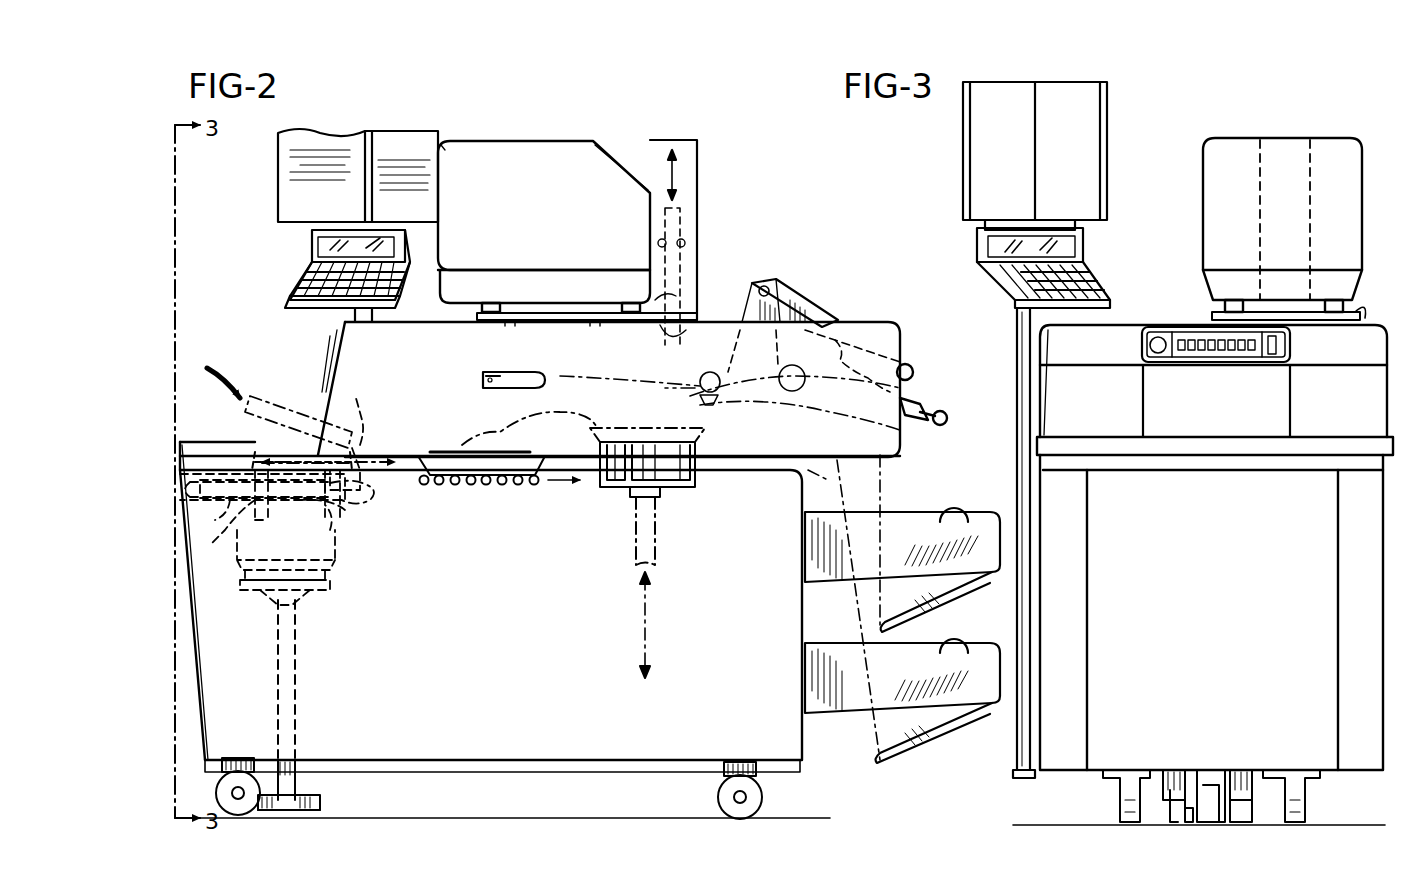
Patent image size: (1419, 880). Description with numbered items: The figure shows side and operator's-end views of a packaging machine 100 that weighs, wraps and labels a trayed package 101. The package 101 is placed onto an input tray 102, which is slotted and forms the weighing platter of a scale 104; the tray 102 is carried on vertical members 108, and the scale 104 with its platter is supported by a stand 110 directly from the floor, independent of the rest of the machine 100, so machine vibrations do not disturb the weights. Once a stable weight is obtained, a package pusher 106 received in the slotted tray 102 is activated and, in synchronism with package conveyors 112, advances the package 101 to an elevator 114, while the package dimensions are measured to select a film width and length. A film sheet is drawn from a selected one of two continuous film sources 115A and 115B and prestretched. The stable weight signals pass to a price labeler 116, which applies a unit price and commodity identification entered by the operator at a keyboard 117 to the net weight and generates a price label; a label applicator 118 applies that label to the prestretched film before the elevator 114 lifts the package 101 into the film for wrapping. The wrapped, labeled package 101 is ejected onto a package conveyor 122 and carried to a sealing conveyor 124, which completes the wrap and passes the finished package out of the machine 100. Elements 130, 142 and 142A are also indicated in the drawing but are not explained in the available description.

In FIG. 2, the packaging machine 100 is at (780, 272).
In FIG. 3, the packaging machine 100 is at (1151, 148).
In FIG. 2, the package 101 is at (268, 395).
In FIG. 2, the input tray 102 is at (360, 448).
In FIG. 3, the input tray 102 is at (1225, 437).
In FIG. 2, the scale 104 is at (335, 530).
In FIG. 2, the package pusher 106 is at (250, 440).
In FIG. 2, the vertical members 108 is at (350, 513).
In FIG. 2, the stand 110 is at (300, 672).
In FIG. 3, the stand 110 is at (1258, 783).
In FIG. 2, the package conveyors 112 is at (481, 488).
In FIG. 2, the elevator 114 is at (668, 497).
In FIG. 2, the continuous source of film 115A is at (938, 645).
In FIG. 2, the continuous source of film 115B is at (935, 505).
In FIG. 2, the price labeler 116 is at (505, 141).
In FIG. 3, the price labeler 116 is at (1235, 148).
In FIG. 2, the keyboard 117 is at (312, 282).
In FIG. 3, the keyboard 117 is at (975, 243).
In FIG. 2, the label applicator 118 is at (690, 160).
In FIG. 2, the package conveyor 122 is at (714, 398).
In FIG. 2, the sealing conveyor 124 is at (852, 398).
In FIG. 3, the control panel housing 130 is at (1298, 348).
In FIG. 3, the control panel 142 is at (1360, 312).
In FIG. 2, the base plate 142A is at (492, 322).